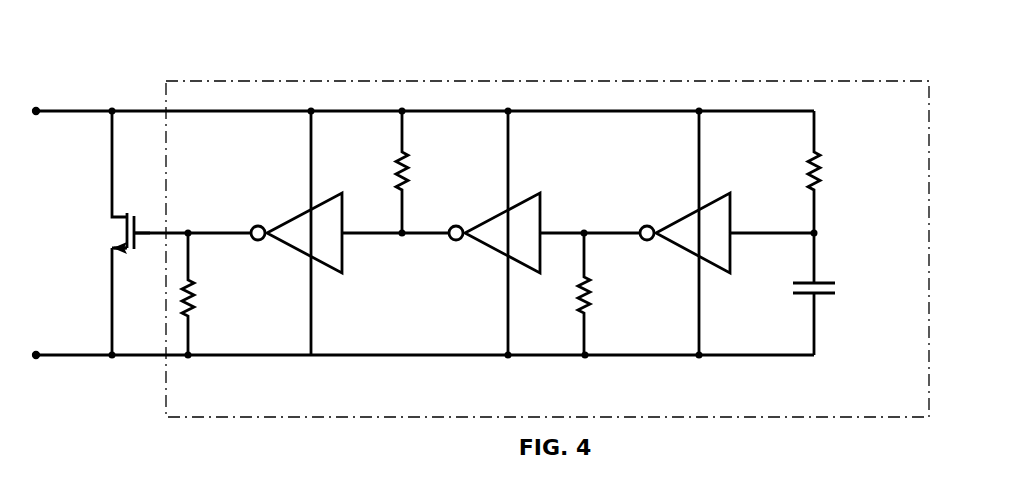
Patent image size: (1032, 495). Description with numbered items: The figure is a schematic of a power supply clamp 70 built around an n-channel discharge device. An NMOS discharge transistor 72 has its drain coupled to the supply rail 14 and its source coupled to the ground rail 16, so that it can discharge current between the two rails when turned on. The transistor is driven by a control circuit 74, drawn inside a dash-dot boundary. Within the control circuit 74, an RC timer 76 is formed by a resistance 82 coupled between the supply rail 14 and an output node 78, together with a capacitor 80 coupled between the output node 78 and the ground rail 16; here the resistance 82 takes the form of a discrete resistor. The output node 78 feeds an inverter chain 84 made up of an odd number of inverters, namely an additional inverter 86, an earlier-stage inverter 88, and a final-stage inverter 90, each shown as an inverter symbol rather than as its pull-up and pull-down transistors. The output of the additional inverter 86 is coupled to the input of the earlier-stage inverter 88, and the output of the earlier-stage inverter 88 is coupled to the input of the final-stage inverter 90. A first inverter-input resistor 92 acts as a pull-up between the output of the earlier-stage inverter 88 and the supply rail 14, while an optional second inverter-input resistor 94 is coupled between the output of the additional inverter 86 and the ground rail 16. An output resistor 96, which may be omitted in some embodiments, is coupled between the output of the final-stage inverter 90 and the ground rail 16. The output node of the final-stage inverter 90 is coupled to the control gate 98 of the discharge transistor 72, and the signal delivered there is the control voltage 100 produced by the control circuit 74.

The supply rail 14 is at (67, 110).
The ground rail 16 is at (65, 357).
The power supply clamp 70 is at (701, 64).
The discharge transistor 72 is at (120, 221).
The control circuit 74 is at (547, 249).
The resistance-capacitance (RC) timer 76 is at (787, 218).
The output node 78 is at (823, 233).
The capacitor 80 is at (815, 297).
The resistance 82 is at (822, 170).
The inverter chain 84 is at (684, 373).
The additional inverter 86 is at (678, 217).
The earlier-stage inverter 88 is at (494, 252).
The final-stage inverter 90 is at (296, 215).
The first inverter-input resistor 92 is at (405, 172).
The second inverter-input resistor 94 is at (588, 302).
The output resistor 96 is at (193, 310).
The control gate 98 is at (135, 243).
The control voltage 100 is at (157, 237).